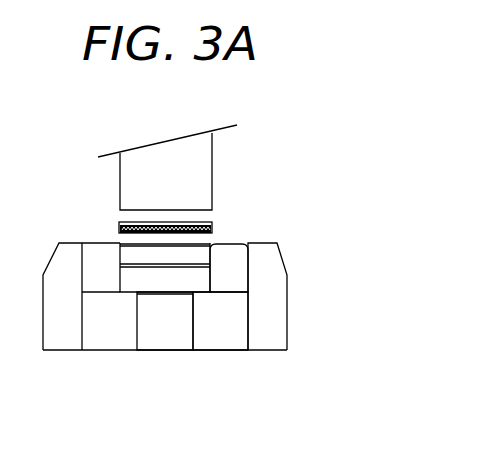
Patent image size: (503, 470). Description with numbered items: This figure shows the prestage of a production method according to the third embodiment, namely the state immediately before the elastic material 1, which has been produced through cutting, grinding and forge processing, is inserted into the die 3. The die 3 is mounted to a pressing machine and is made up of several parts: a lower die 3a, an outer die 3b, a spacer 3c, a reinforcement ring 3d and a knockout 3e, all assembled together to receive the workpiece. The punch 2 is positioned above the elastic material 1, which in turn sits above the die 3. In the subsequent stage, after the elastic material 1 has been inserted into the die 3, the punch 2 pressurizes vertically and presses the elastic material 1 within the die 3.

The elastic material 1 is at (212, 227).
The punch 2 is at (202, 188).
The die 3 is at (244, 328).
The lower die 3a is at (198, 277).
The outer die 3b is at (235, 285).
The spacer 3c is at (230, 326).
The reinforcement ring 3d is at (268, 341).
The knockout 3e is at (180, 342).